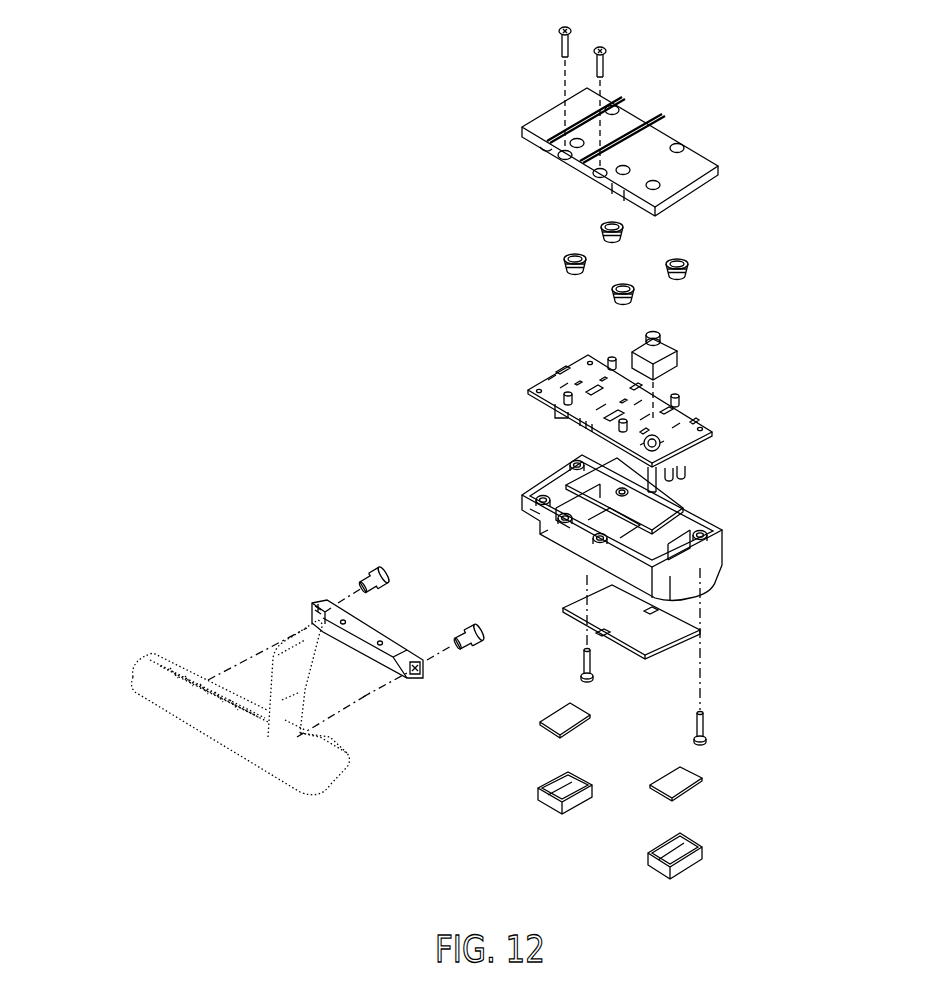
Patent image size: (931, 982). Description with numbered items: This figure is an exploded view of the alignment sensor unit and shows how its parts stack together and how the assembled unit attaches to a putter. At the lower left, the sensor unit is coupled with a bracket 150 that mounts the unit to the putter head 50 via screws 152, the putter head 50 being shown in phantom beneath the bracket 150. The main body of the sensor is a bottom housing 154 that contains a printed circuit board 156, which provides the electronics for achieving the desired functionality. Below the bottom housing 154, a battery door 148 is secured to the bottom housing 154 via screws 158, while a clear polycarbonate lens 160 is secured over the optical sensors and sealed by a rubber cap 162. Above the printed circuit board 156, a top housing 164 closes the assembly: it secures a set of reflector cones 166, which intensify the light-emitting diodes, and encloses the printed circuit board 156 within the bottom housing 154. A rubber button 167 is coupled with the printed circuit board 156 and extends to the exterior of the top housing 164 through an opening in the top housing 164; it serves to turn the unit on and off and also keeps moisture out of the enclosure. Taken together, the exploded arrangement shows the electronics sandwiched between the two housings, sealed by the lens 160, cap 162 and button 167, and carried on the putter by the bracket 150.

The putter head 50 is at (195, 713).
The battery door 148 is at (692, 631).
The bracket 150 is at (312, 602).
The screws 152 is at (362, 583).
The bottom housing 154 is at (520, 487).
The printed circuit board 156 is at (545, 373).
The screws 158 is at (702, 712).
The clear polycarbonate lens 160 is at (700, 782).
The rubber cap 162 is at (703, 845).
The top housing 164 is at (530, 115).
The reflector cones 166 is at (560, 263).
The rubber button 167 is at (680, 347).